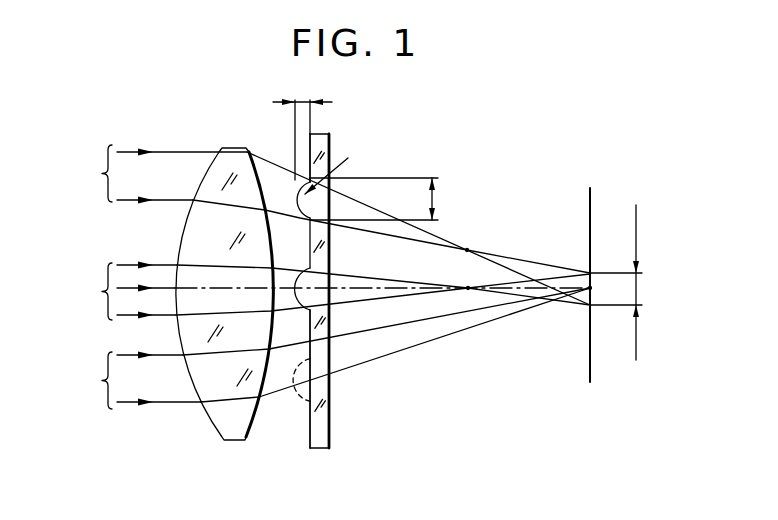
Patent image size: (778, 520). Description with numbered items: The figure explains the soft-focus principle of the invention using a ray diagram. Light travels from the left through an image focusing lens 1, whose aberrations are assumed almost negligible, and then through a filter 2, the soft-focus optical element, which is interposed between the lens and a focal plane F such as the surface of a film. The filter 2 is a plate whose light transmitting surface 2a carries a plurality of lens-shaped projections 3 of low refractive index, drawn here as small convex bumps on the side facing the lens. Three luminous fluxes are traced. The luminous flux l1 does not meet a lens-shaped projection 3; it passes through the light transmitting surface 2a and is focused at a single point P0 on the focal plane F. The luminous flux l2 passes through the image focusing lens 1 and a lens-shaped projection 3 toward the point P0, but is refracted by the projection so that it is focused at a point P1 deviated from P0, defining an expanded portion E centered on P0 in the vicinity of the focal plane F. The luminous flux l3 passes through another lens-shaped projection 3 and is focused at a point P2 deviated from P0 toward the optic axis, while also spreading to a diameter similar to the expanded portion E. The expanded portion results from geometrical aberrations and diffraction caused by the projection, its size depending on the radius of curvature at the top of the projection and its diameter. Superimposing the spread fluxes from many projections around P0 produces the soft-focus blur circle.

The image focusing lens 1 is at (235, 147).
The filter 2 is at (323, 452).
The light transmitting surface 2a is at (310, 428).
The lens-shaped projection 3 is at (298, 201).
The height of lens element h is at (301, 100).
The radius of curvature of lens element r is at (334, 166).
The luminous flux l1 is at (331, 348).
The luminous flux l2 is at (329, 291).
The luminous flux l3 is at (329, 225).
The focal plane F is at (590, 206).
The point Po P0 is at (591, 288).
The point P1 is at (471, 283).
The point P2 is at (468, 250).
The expanded portion E is at (637, 286).